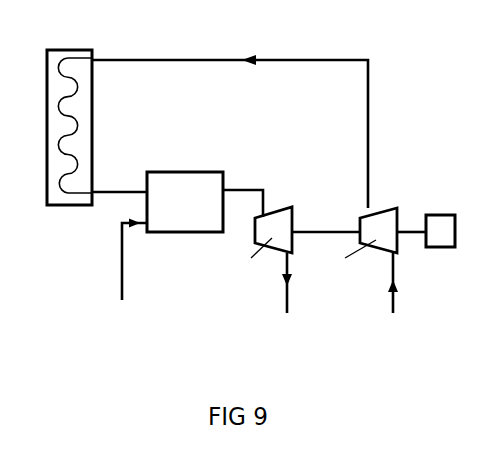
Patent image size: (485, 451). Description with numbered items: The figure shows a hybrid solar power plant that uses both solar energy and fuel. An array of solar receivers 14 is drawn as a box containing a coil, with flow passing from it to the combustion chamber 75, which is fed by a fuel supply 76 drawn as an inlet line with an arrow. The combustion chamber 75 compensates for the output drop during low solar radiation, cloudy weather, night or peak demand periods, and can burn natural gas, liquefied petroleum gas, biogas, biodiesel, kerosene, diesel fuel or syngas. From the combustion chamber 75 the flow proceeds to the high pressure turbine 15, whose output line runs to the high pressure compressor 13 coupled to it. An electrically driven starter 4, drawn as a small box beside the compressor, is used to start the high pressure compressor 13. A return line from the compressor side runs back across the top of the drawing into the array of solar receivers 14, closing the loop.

The array of solar receivers 14 is at (58, 49).
The combustion chamber 75 is at (176, 172).
The fuel supply 76 is at (124, 283).
The high pressure turbine 15 is at (288, 207).
The high pressure compressor 13 is at (388, 208).
The starter 4 is at (437, 215).